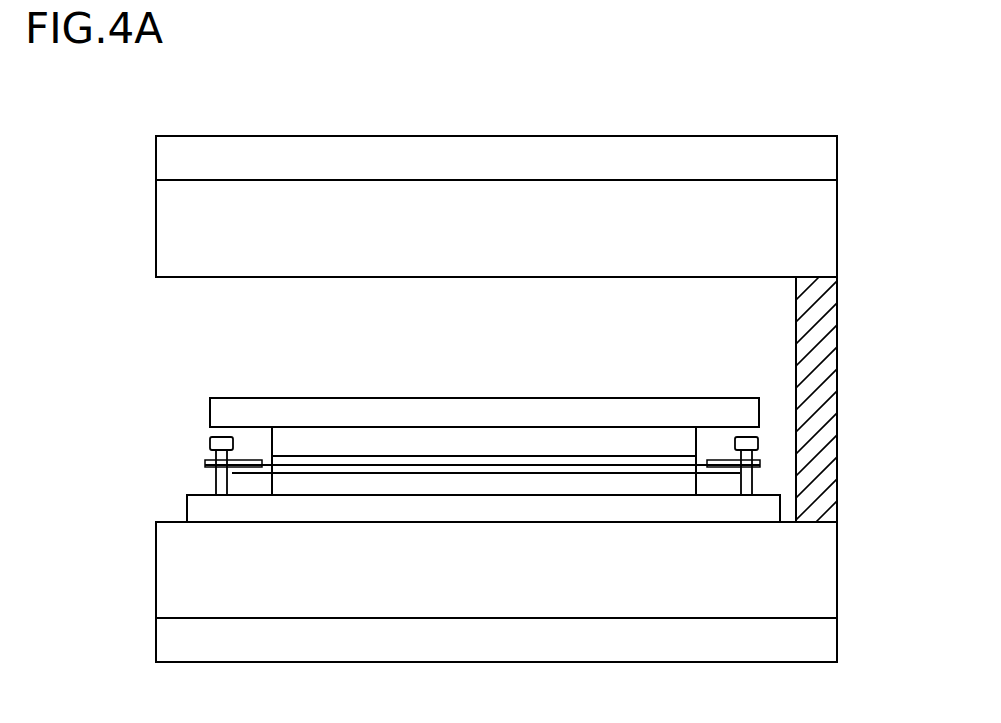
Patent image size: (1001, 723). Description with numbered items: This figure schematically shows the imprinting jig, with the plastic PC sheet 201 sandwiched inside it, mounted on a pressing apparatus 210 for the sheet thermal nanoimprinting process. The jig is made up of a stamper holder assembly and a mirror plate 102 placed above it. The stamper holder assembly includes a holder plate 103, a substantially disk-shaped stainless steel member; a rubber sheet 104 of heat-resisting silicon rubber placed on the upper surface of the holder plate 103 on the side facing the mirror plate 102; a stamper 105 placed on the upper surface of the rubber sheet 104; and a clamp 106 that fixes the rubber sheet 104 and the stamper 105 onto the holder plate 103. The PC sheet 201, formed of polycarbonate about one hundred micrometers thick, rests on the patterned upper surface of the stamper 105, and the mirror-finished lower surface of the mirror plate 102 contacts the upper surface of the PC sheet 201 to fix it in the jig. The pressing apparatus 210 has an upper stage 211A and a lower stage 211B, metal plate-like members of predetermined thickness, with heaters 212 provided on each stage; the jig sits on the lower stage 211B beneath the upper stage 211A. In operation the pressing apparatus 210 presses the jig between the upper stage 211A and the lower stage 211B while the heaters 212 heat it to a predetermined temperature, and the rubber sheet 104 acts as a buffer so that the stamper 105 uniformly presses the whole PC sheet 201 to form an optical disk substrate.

The mirror plate 102 is at (245, 413).
The holder plate 103 is at (748, 517).
The rubber sheet 104 is at (688, 487).
The stamper 105 is at (723, 470).
The clamp 106 is at (758, 443).
The PC sheet 201 is at (292, 467).
The pressing apparatus 210 is at (773, 103).
The upper stage 211A is at (360, 208).
The lower stage 211B is at (328, 595).
The heater 212 is at (577, 153).